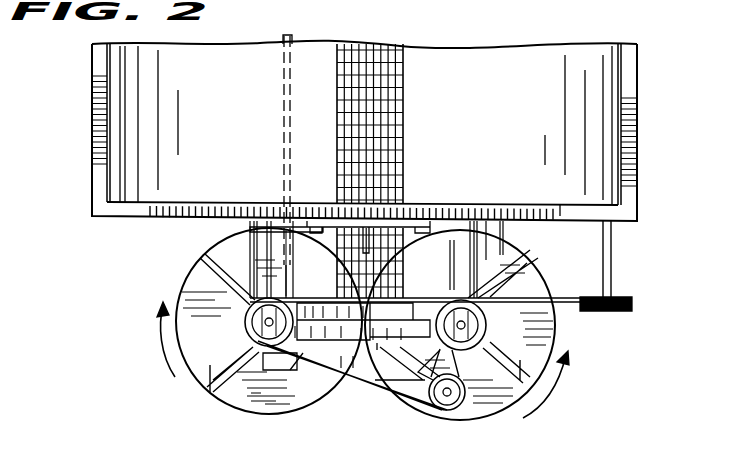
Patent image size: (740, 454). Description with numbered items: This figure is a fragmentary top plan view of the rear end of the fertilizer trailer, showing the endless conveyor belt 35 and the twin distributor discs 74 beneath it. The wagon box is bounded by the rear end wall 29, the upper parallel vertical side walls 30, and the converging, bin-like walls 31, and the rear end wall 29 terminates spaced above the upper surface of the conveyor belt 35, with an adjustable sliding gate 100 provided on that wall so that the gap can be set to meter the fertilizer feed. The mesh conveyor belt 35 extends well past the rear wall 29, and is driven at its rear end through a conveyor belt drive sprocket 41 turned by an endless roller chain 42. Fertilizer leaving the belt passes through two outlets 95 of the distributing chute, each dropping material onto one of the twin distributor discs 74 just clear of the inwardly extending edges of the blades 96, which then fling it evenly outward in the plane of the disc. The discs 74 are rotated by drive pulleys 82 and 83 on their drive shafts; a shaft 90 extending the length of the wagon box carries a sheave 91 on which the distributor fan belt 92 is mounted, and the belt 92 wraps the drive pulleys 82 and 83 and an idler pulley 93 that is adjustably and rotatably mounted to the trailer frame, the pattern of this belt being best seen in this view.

The rear end wall 29 is at (160, 218).
The upper side walls 30 is at (92, 121).
The converging bin-like walls 31 is at (607, 93).
The endless conveyor belt 35 is at (403, 138).
The conveyor belt drive sprocket 41 is at (286, 262).
The endless roller chain 42 is at (283, 117).
The twin distributor discs 74 is at (276, 414).
The drive pulley 82 is at (247, 331).
The drive pulley 83 is at (487, 329).
The shaft 90 is at (611, 262).
The sheave 91 is at (600, 312).
The distributor fan belt 92 is at (562, 299).
The idler pulley 93 is at (438, 410).
The outlets 95 is at (376, 387).
The blades 96 is at (196, 264).
The adjustable sliding gate 100 is at (393, 218).